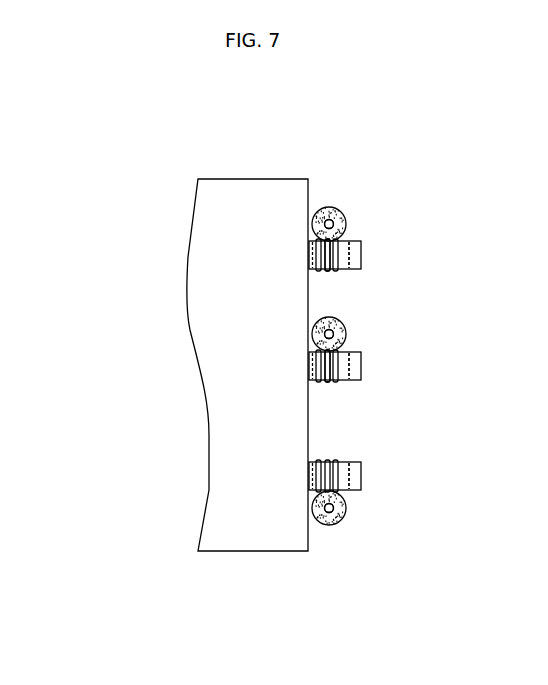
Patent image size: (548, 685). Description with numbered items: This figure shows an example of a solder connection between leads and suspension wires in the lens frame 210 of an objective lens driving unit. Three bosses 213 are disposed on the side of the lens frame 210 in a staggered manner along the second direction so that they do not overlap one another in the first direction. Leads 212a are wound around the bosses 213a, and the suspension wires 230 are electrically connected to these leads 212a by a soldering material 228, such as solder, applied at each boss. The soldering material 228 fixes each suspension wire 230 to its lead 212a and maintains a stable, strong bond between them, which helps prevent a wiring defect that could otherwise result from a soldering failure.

The lens frame 210 is at (245, 183).
The soldering material 228 is at (331, 205).
The suspension wire 230 is at (338, 221).
The boss 213 is at (381, 255).
The boss 213a is at (357, 248).
The lead 212a is at (329, 270).